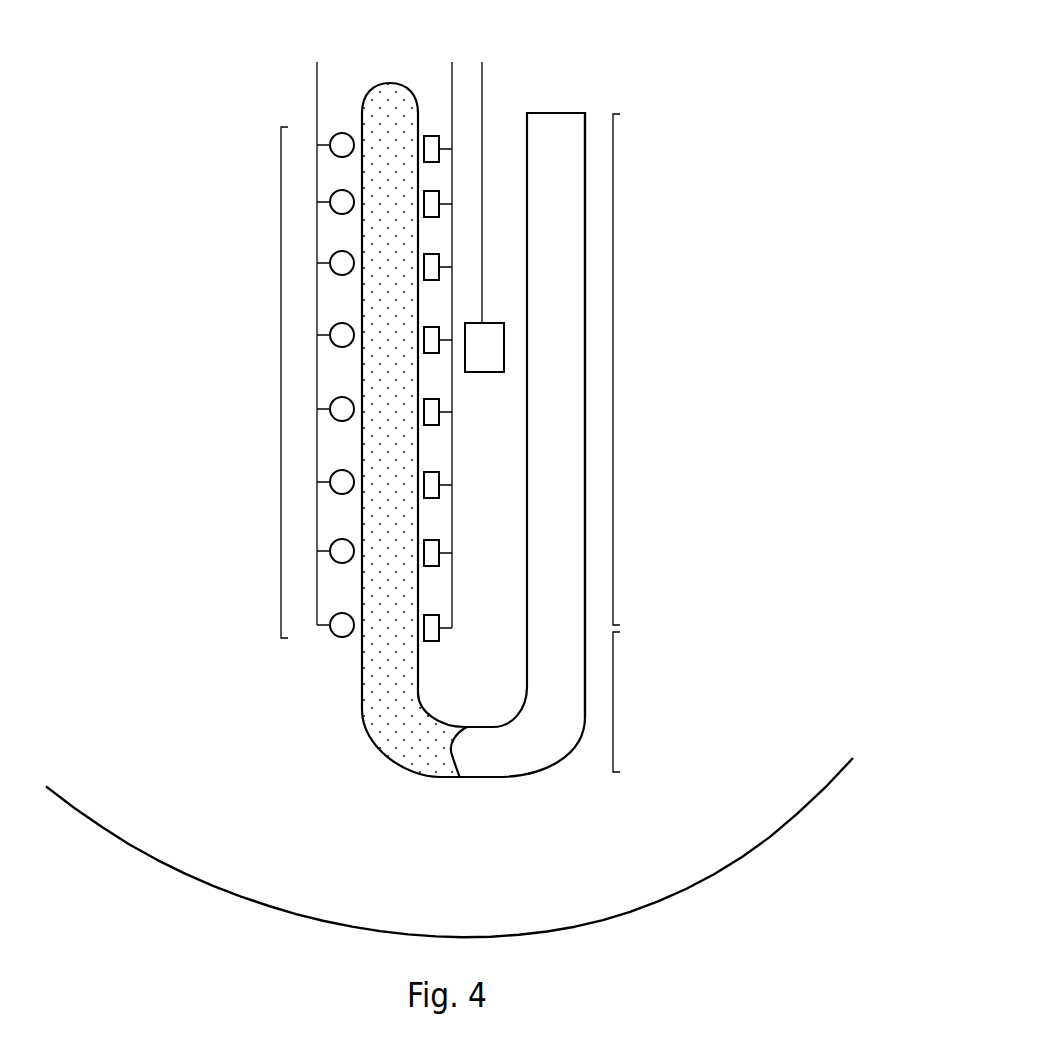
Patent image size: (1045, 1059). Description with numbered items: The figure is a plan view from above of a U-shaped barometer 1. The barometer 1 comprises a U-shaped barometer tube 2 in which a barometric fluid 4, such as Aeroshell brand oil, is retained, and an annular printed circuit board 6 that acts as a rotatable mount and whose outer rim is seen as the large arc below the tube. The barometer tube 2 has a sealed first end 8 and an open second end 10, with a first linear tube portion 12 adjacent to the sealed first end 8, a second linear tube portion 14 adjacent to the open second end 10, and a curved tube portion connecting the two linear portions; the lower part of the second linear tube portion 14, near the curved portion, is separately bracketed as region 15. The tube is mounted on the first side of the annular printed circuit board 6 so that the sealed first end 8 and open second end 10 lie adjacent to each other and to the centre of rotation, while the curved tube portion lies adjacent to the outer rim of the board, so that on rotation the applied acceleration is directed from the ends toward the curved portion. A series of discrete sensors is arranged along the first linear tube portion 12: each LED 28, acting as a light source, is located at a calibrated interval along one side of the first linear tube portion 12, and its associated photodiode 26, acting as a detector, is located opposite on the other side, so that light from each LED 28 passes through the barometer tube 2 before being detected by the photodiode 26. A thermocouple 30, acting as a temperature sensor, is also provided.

The barometer 1 is at (164, 171).
The barometer tube 2 is at (372, 738).
The barometric fluid 4 is at (382, 682).
The annular printed circuit board 6 is at (693, 792).
The sealed first end 8 is at (392, 83).
The open second end 10 is at (555, 113).
The first linear tube portion 12 is at (281, 380).
The second linear tube portion 14 is at (614, 378).
The second section 15 is at (614, 705).
The photodiode 26 is at (432, 148).
The LED 28 is at (339, 137).
The thermocouple 30 is at (490, 372).